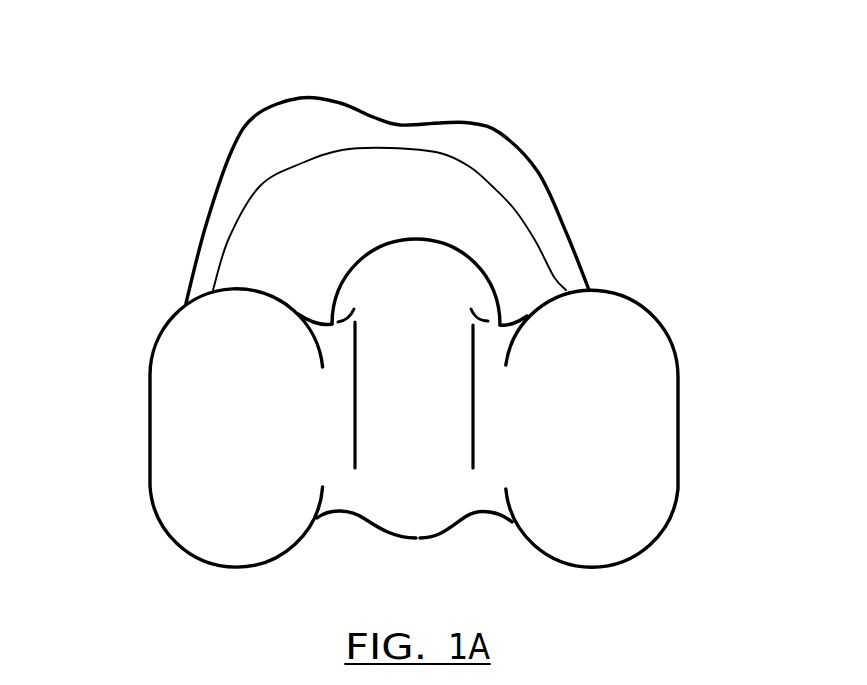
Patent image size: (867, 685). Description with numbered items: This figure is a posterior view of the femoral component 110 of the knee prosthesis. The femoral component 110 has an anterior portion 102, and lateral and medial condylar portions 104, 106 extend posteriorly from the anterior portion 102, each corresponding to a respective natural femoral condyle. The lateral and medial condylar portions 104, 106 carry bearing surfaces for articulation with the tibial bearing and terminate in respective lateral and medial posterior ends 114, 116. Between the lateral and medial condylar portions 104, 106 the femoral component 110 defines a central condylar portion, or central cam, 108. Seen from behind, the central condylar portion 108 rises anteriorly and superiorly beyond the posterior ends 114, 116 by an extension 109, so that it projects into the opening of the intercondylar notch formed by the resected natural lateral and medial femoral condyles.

The anterior portion 102 is at (470, 206).
The lateral condylar portion 104 is at (185, 428).
The medial condylar portion 106 is at (633, 427).
The central condylar portion 108 is at (418, 473).
The extension 109 is at (410, 237).
The femoral component 110 is at (585, 82).
The lateral posterior end 114 is at (213, 292).
The medial posterior end 116 is at (613, 288).